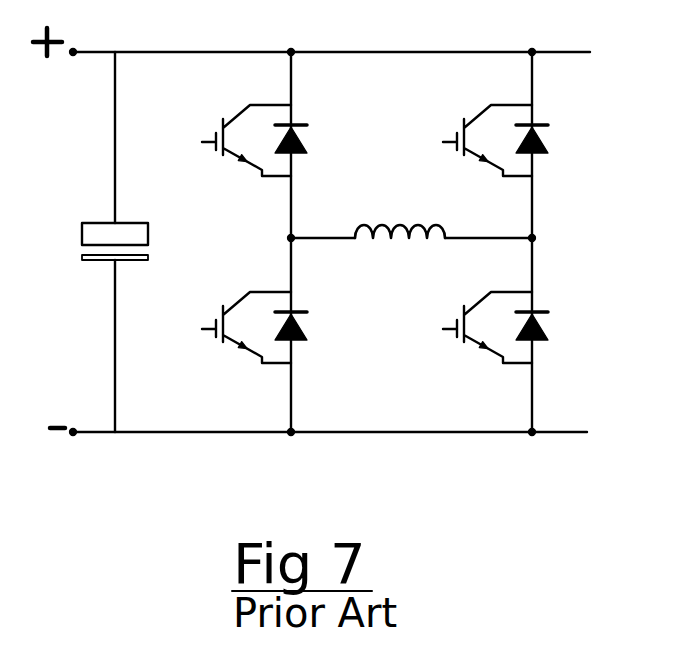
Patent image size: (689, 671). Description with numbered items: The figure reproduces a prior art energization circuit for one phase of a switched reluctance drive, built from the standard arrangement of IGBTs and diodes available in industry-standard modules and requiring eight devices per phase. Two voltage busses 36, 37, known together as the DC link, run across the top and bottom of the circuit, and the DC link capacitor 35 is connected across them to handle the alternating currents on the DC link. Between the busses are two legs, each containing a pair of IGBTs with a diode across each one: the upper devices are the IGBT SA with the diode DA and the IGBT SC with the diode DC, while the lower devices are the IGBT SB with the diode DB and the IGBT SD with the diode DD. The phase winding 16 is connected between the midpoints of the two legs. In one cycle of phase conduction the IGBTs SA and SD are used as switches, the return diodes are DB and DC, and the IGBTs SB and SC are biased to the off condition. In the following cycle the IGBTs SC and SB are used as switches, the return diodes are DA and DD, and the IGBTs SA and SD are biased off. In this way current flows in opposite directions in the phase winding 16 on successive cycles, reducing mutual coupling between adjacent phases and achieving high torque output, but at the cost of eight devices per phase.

The phase winding 16 is at (377, 218).
The DC link capacitor 35 is at (78, 248).
The voltage bus 36 is at (197, 50).
The voltage bus 37 is at (177, 433).
The IGBT SA is at (212, 117).
The IGBT SB is at (220, 326).
The IGBT SC is at (464, 139).
The IGBT SD is at (464, 326).
The return diode DA is at (308, 140).
The return diode DB is at (327, 335).
The return diode DC is at (566, 147).
The return diode DD is at (567, 334).